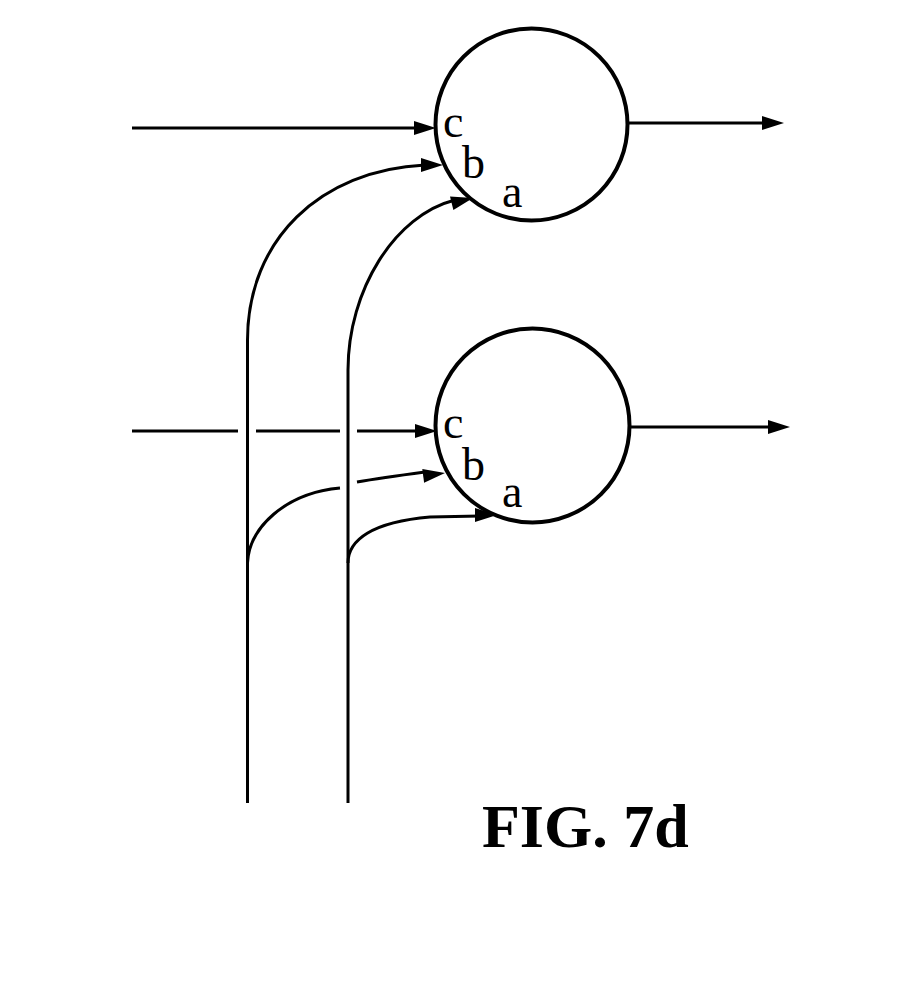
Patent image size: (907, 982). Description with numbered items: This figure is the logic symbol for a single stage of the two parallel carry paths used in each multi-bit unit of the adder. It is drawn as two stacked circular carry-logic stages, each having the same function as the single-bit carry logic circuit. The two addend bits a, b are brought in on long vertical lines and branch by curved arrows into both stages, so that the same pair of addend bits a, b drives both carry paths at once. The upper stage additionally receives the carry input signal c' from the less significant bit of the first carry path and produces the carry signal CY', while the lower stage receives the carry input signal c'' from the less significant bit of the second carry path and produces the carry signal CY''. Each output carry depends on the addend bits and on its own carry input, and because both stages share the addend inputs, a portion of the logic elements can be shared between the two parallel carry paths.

The addend bit a is at (419, 534).
The addend bit b is at (342, 514).
The carry input signal c' is at (258, 132).
The carry input signal c'' is at (258, 432).
The carry signal CY' is at (745, 129).
The carry signal CY'' is at (753, 436).